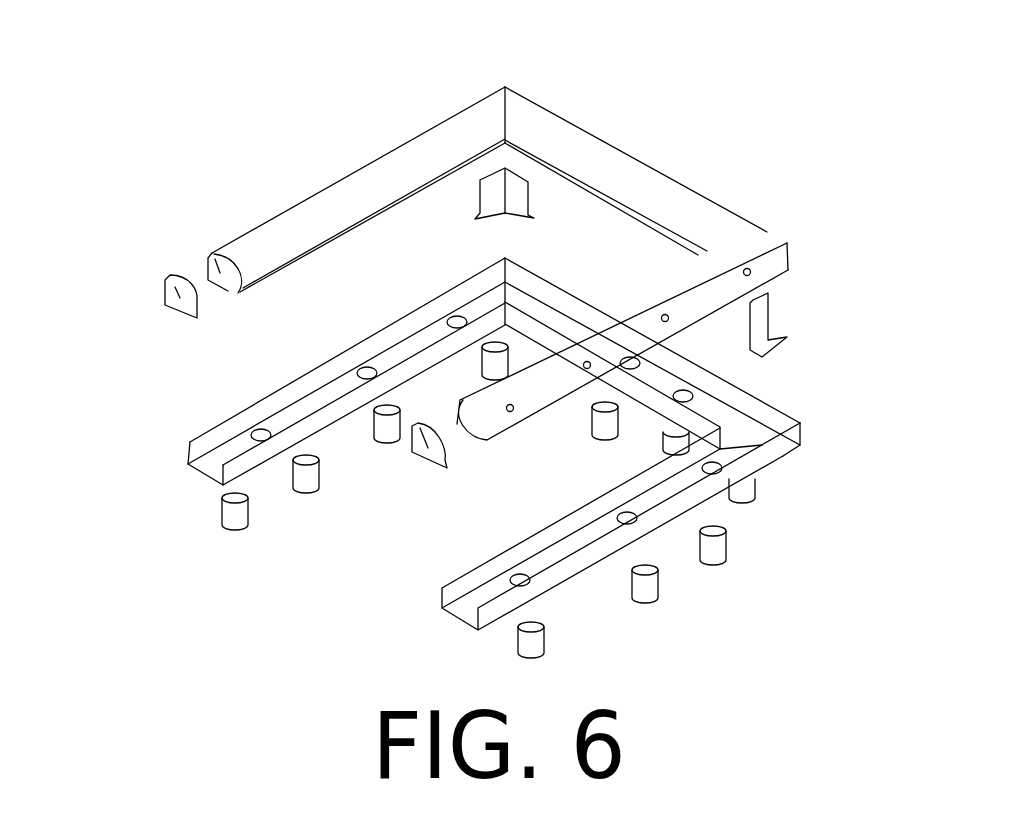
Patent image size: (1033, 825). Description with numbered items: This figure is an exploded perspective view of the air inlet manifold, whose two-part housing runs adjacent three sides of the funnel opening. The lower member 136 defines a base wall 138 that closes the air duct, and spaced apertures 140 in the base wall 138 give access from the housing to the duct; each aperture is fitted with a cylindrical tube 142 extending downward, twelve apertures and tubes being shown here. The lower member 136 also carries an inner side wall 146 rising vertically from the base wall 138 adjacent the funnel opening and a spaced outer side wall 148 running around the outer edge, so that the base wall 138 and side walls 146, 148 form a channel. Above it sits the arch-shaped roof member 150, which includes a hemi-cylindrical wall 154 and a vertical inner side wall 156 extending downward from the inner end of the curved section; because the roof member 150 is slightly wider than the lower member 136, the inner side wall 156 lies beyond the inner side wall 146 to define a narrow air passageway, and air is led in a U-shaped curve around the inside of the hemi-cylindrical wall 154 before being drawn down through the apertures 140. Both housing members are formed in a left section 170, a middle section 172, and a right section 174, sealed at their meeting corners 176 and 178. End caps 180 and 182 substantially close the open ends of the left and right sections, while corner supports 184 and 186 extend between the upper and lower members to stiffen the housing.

The lower member 136 is at (472, 484).
The base wall 138 is at (197, 468).
The apertures 140 is at (630, 520).
The cylindrical tubes 142 is at (307, 482).
The inner side wall 146 is at (460, 333).
The outer side wall 148 is at (192, 446).
The roof member 150 is at (481, 199).
The hemi-cylindrical wall 154 is at (733, 258).
The vertical inner side wall 156 is at (240, 294).
The left section 170 is at (260, 243).
The middle section 172 is at (610, 166).
The right section 174 is at (658, 266).
The meeting corner 176 is at (500, 107).
The meeting corner 178 is at (786, 243).
The end cap 180 is at (170, 275).
The end cap 182 is at (423, 443).
The corner support 184 is at (488, 200).
The corner support 186 is at (761, 329).